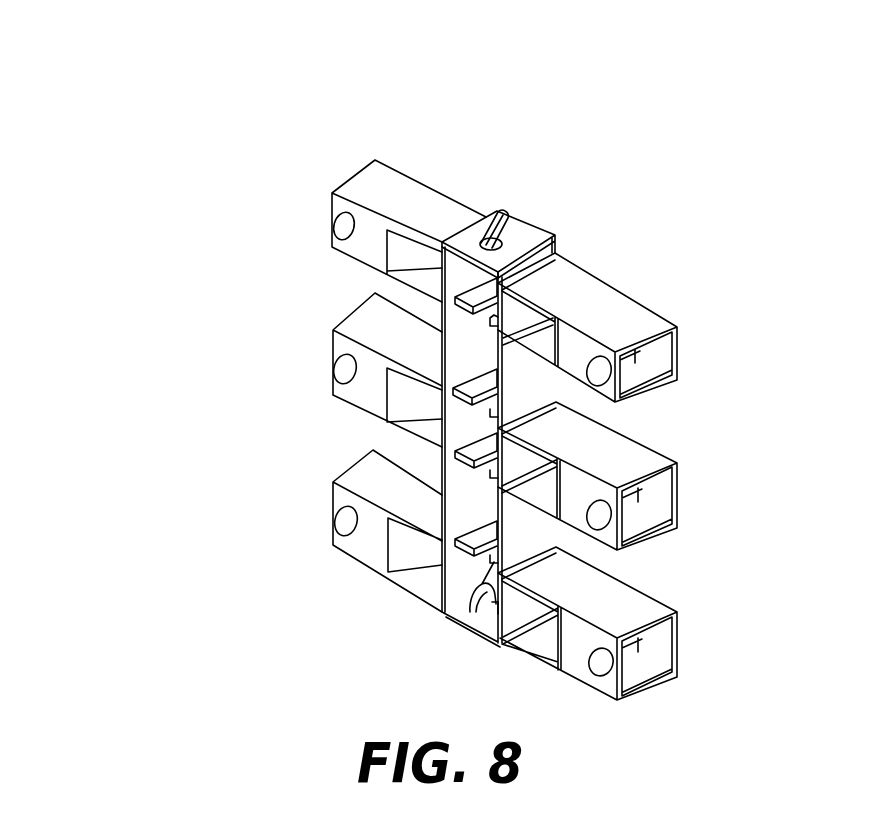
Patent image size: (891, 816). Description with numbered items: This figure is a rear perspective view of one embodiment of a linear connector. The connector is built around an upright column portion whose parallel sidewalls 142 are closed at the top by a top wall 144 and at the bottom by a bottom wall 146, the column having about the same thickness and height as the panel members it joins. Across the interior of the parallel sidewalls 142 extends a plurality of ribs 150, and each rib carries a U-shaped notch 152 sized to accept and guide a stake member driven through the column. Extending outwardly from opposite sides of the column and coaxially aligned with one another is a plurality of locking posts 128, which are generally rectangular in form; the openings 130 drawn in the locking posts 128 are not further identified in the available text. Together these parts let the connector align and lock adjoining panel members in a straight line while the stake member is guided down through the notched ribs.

The locking posts 128 is at (378, 162).
The hole 130 is at (343, 227).
The parallel sidewalls 142 is at (512, 380).
The top wall 144 is at (481, 218).
The bottom wall 146 is at (458, 625).
The ribs 150 is at (472, 453).
The U-shaped notch 152 is at (480, 317).